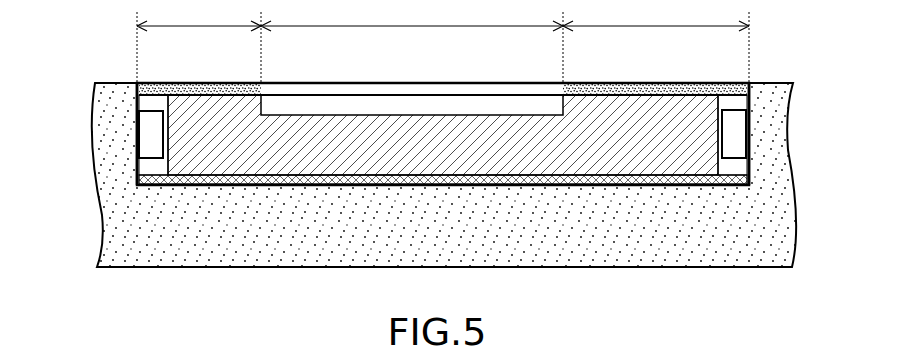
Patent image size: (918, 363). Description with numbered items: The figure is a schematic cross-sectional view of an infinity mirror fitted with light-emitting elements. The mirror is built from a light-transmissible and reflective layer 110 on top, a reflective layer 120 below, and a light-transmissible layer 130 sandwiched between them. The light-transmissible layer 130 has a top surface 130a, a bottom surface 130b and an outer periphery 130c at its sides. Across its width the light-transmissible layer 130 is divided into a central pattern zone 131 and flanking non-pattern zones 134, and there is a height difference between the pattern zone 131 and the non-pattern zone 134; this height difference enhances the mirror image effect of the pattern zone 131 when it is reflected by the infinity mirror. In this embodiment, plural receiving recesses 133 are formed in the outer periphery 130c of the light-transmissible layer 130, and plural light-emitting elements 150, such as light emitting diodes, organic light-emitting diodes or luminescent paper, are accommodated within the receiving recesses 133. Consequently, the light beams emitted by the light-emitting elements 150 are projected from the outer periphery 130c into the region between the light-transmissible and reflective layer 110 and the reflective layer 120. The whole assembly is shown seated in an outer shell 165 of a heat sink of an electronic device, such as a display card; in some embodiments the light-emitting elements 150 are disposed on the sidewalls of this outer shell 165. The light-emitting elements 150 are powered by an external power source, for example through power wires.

The light-transmissible and reflective layer 110 is at (600, 83).
The reflective layer 120 is at (550, 178).
The light-transmissible layer 130 is at (643, 113).
The top surface 130a is at (228, 83).
The bottom surface 130b is at (413, 175).
The outer periphery 130c is at (165, 165).
The pattern zone 131 is at (412, 43).
The receiving recess 133 is at (150, 165).
The non-pattern zone 134 is at (443, 43).
The light-emitting element 150 is at (145, 132).
The outer shell 165 is at (530, 255).